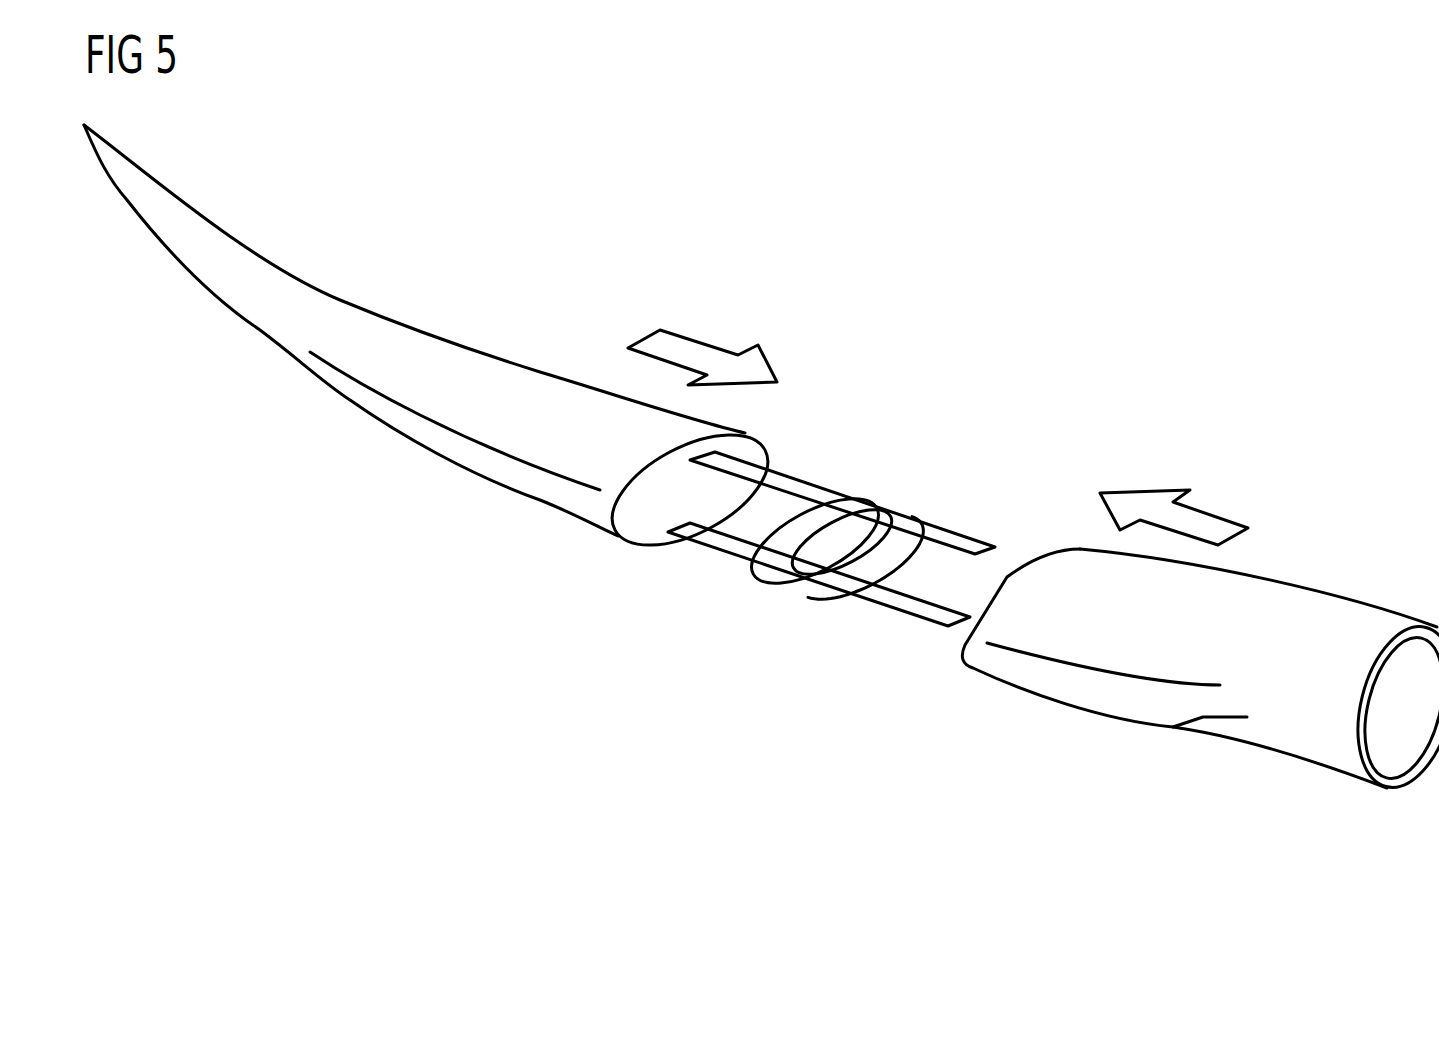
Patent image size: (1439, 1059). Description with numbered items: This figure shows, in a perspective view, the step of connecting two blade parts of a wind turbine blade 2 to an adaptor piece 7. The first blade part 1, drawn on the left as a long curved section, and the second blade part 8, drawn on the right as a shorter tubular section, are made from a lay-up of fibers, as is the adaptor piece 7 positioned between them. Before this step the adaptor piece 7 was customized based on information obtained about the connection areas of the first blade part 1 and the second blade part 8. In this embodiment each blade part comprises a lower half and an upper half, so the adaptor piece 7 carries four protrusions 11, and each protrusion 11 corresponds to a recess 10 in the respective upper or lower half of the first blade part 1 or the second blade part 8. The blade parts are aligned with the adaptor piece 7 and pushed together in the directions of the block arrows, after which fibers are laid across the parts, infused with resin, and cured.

The blade part 1 is at (552, 496).
The wind turbine blade 2 is at (1150, 152).
The adaptor piece 7 is at (815, 594).
The blade part 8 is at (1288, 742).
The recess 10 is at (640, 524).
The protrusion 11 is at (785, 460).